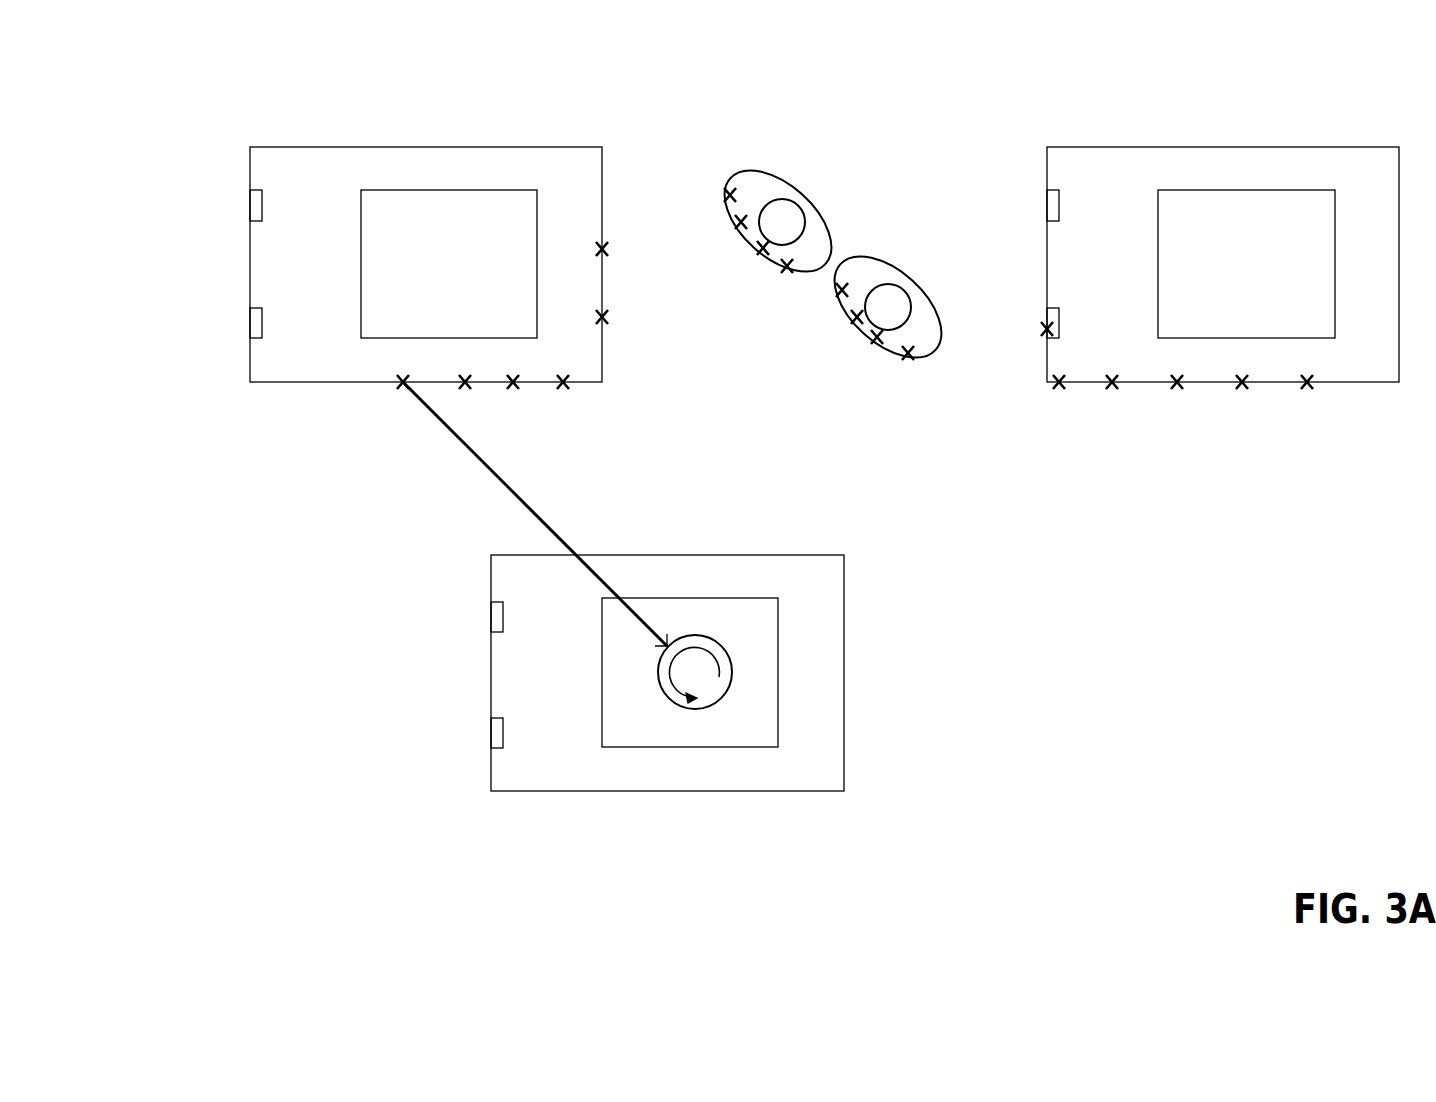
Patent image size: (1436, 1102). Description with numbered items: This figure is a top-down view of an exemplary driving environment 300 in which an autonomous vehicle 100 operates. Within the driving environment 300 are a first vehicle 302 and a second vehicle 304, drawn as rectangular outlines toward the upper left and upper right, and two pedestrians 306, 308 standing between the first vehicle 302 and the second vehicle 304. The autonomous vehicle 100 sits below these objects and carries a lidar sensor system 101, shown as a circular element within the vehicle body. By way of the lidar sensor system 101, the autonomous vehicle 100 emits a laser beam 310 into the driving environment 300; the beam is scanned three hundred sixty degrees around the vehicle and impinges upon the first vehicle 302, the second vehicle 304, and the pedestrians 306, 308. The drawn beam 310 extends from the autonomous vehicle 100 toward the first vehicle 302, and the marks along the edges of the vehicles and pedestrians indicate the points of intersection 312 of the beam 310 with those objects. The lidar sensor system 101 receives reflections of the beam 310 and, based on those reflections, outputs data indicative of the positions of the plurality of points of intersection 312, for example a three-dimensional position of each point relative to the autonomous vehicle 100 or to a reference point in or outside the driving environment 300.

The driving environment 300 is at (167, 72).
The first vehicle 302 is at (429, 273).
The second vehicle 304 is at (1225, 147).
The pedestrian 306 is at (800, 197).
The pedestrian 308 is at (910, 283).
The laser beam 310 is at (557, 528).
The points of intersection 312 is at (400, 388).
The autonomous vehicle 100 is at (713, 654).
The lidar sensor system 101 is at (693, 635).